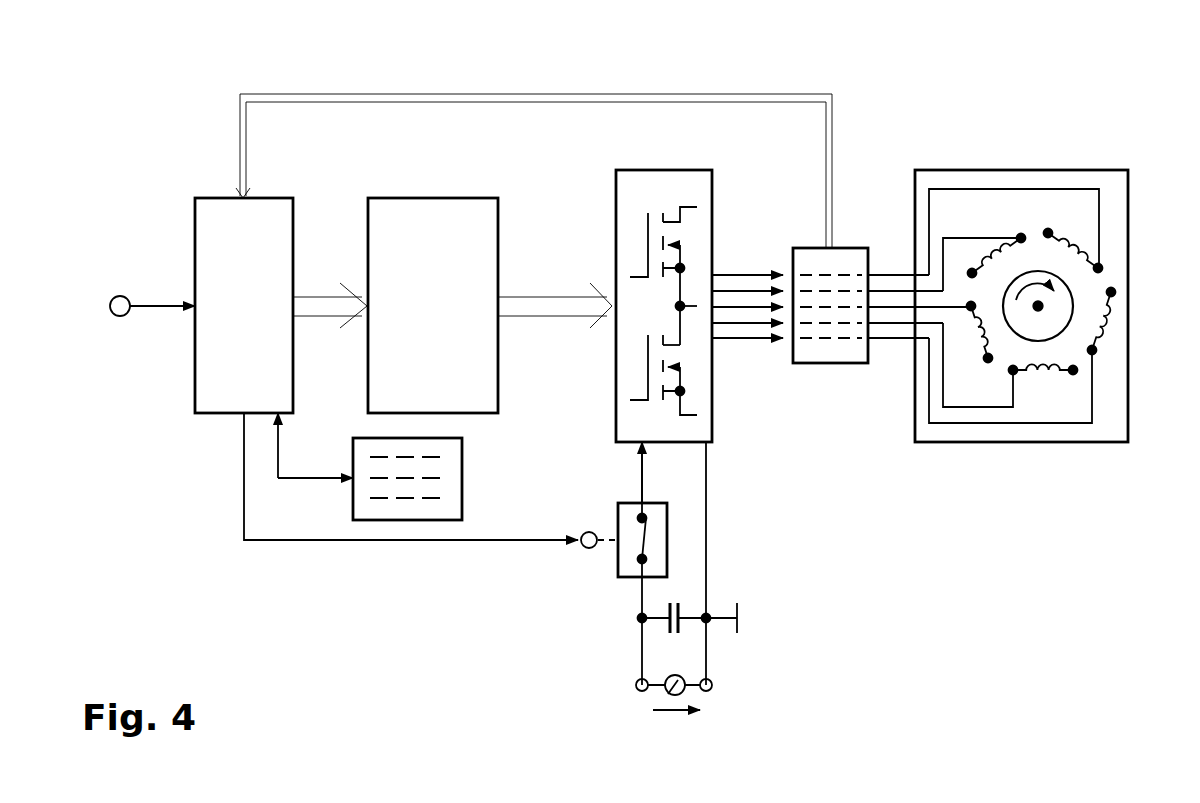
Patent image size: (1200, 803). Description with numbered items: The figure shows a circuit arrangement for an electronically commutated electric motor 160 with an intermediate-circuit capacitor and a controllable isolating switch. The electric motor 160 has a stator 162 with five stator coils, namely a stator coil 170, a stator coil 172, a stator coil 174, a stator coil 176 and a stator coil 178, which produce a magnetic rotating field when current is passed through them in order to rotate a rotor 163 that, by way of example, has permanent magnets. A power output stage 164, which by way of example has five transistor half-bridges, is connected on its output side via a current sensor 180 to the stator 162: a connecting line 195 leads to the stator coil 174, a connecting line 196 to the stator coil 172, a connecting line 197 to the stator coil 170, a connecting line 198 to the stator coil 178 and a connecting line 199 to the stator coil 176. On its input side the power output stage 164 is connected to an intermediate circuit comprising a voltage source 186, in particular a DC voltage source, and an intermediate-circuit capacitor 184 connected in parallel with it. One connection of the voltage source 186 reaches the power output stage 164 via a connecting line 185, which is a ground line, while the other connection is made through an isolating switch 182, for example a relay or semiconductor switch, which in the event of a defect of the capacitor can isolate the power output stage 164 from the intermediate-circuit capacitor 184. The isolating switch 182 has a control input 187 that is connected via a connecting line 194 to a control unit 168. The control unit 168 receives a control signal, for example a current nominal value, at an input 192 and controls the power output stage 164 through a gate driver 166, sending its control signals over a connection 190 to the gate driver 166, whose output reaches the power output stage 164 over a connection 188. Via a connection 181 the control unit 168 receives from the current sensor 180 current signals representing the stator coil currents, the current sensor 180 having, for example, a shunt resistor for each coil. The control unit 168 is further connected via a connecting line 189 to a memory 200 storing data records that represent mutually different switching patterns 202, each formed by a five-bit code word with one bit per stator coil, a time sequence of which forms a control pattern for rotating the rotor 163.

The electronically commutated electric motor 160 is at (873, 530).
The stator 162 is at (952, 170).
The rotor 163 is at (1068, 302).
The power output stage 164 is at (655, 182).
The gate driver 166 is at (438, 205).
The control unit 168 is at (210, 212).
The stator coil 170 is at (975, 330).
The stator coil 172 is at (997, 263).
The stator coil 174 is at (1078, 250).
The stator coil 176 is at (1105, 322).
The stator coil 178 is at (1040, 373).
The current sensor 180 is at (832, 353).
The connection 181 is at (746, 94).
The isolating switch 182 is at (625, 565).
The intermediate-circuit capacitor 184 is at (690, 628).
The connecting line 185 is at (708, 543).
The voltage source 186 is at (668, 691).
The control input 187 is at (589, 531).
The connection 188 is at (545, 302).
The connecting line 189 is at (278, 462).
The connection 190 is at (318, 302).
The input 192 is at (118, 318).
The connecting line 194 is at (425, 542).
The connecting line 195 is at (733, 275).
The connecting line 196 is at (752, 291).
The connecting line 197 is at (733, 309).
The connecting line 198 is at (752, 325).
The connecting line 199 is at (786, 341).
The memory 200 is at (442, 516).
The switching pattern 202 is at (382, 500).